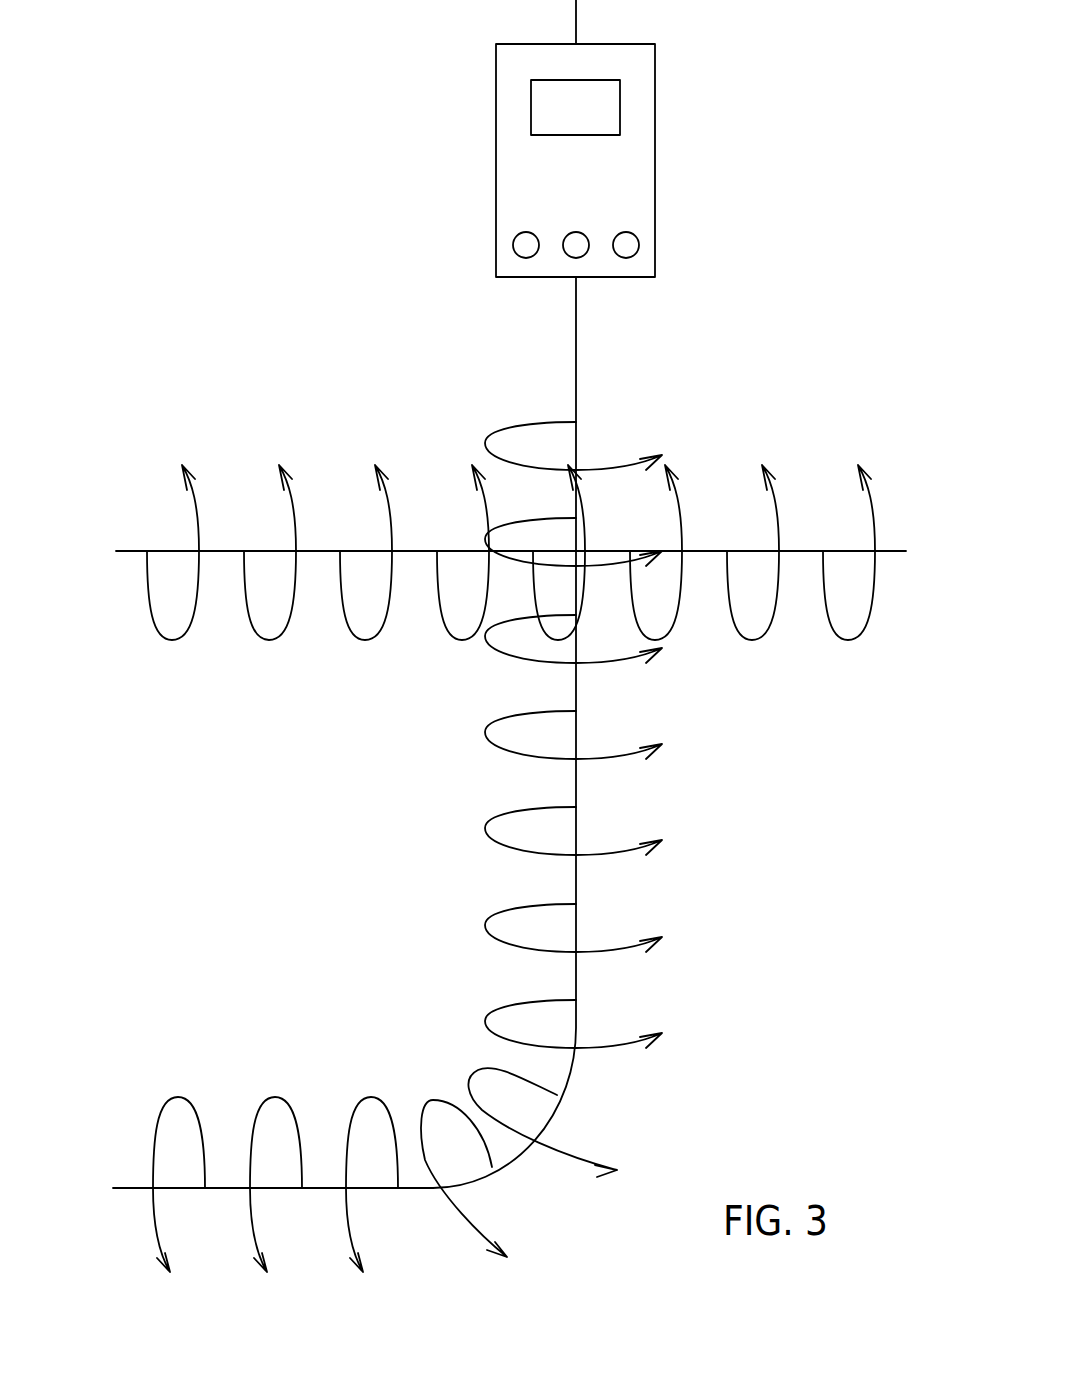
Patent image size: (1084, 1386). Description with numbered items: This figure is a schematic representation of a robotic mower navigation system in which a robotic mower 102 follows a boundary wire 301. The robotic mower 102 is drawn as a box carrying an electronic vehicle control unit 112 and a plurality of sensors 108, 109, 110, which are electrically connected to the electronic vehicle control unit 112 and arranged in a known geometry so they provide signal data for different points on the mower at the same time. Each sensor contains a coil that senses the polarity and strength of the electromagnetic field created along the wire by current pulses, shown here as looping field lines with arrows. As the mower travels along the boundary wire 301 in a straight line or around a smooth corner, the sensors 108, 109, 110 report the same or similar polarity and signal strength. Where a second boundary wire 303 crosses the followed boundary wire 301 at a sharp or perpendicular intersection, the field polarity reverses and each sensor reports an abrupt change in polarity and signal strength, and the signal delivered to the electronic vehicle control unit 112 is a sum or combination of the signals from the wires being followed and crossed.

The robotic mower 102 is at (495, 138).
The electronic vehicle control unit 112 is at (530, 89).
The sensor 110 is at (513, 248).
The sensor 109 is at (566, 252).
The sensor 108 is at (622, 257).
The boundary wire 303 is at (229, 551).
The boundary wire 301 is at (228, 1188).